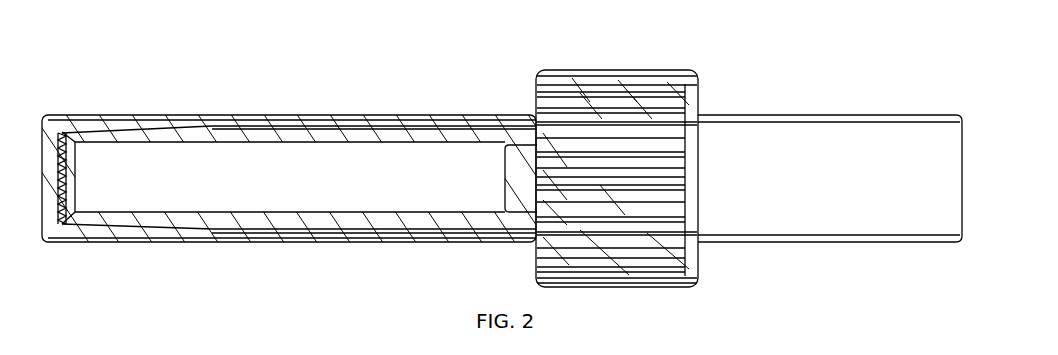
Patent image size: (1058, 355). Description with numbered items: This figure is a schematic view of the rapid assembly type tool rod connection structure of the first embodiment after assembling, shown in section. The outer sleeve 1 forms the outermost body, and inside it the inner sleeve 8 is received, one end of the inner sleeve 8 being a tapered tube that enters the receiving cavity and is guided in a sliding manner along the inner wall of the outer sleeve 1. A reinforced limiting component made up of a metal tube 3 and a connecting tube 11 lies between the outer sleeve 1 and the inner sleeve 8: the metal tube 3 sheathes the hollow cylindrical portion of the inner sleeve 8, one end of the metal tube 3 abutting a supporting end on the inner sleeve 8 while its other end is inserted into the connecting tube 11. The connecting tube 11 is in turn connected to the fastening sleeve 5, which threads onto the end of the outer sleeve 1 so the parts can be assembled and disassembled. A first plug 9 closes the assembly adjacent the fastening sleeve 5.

The outer sleeve 1 is at (97, 118).
The metal tube 3 is at (317, 123).
The inner sleeve 8 is at (183, 133).
The first plug 9 is at (562, 162).
The fastening sleeve 5 is at (707, 86).
The connecting tube 11 is at (785, 130).